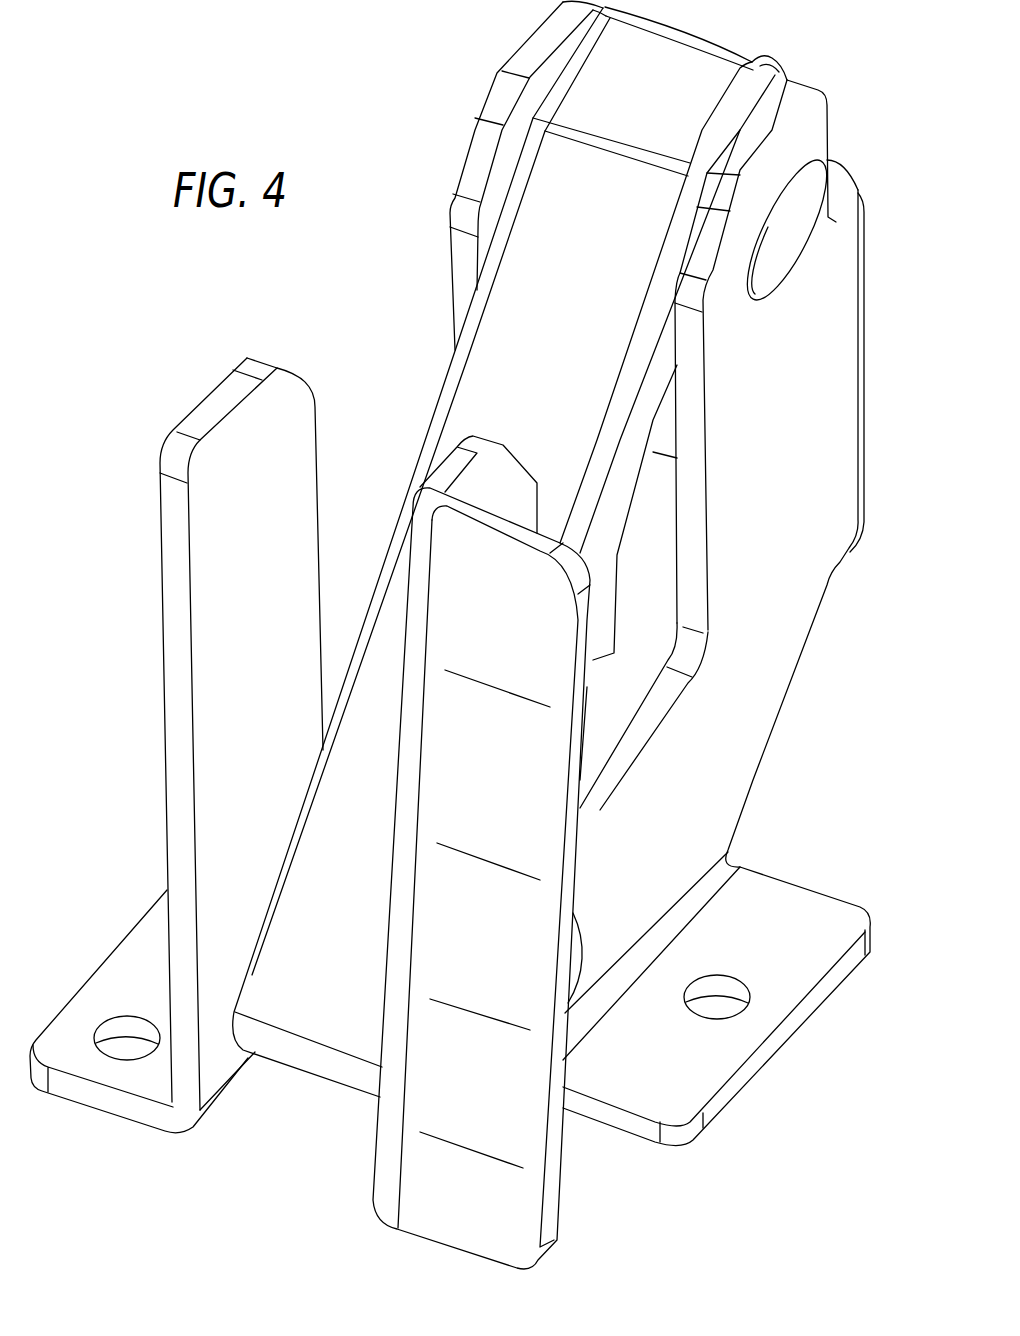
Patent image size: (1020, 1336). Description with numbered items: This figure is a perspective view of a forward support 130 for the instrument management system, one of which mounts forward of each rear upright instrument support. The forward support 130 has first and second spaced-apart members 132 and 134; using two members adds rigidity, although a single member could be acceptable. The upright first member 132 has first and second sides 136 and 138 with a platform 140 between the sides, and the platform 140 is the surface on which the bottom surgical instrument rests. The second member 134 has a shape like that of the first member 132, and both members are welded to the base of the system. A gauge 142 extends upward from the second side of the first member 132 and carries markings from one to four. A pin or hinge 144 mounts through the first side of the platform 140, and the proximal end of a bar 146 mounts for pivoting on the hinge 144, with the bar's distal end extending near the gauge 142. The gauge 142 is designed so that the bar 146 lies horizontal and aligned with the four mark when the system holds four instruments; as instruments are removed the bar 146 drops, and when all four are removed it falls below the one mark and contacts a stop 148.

The forward support 130 is at (430, 125).
The first member 132 is at (803, 393).
The second member 134 is at (537, 50).
The first side 136 is at (833, 495).
The second side 138 is at (588, 972).
The platform 140 is at (643, 713).
The gauge 142 is at (570, 823).
The pin or hinge 144 is at (788, 230).
The bar 146 is at (518, 372).
The stop 148 is at (577, 943).